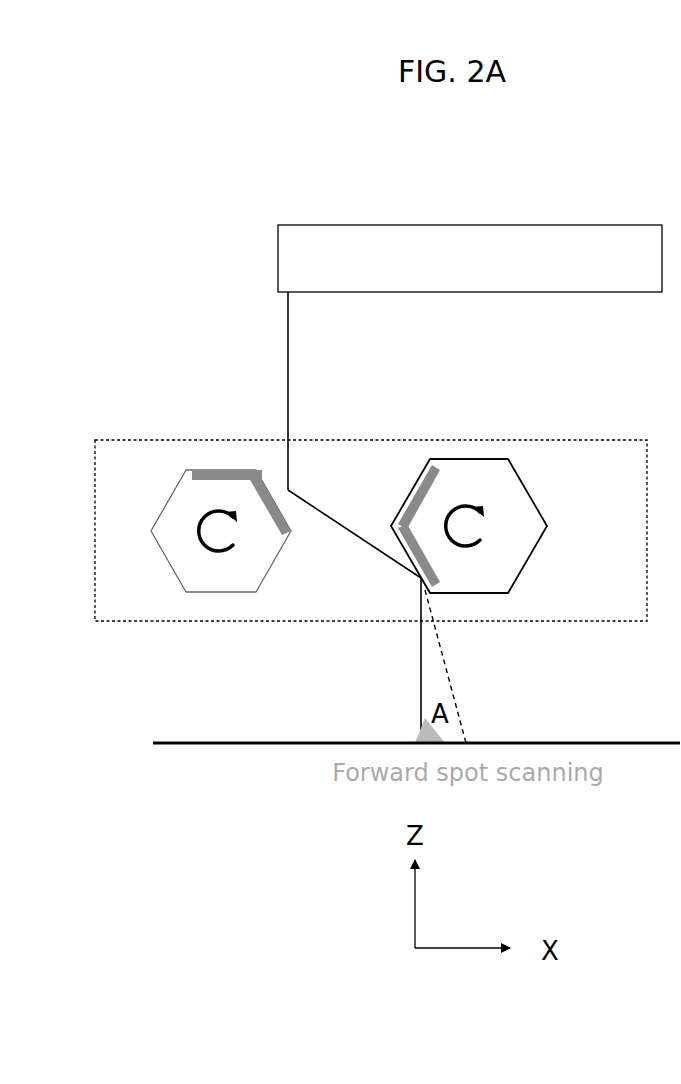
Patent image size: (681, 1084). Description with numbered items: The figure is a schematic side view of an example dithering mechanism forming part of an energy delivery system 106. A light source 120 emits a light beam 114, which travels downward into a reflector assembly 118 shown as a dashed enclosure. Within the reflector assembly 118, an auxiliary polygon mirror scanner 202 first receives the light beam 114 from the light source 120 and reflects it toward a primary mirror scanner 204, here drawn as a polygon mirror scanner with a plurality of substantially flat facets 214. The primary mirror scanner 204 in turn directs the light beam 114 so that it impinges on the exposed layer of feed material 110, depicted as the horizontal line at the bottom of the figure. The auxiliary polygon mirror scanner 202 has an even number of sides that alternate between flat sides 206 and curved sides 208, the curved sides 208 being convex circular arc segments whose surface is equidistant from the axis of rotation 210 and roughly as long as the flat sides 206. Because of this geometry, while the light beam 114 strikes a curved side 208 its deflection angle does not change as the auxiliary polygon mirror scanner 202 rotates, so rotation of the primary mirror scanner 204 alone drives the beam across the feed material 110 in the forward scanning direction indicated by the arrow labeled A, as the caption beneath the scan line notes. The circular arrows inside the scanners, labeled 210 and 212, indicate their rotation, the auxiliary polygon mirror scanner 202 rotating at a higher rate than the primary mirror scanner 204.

The energy delivery system 106 is at (216, 258).
The light source 120 is at (470, 258).
The light beam 114 is at (286, 323).
The reflector assembly 118 is at (388, 440).
The auxiliary polygon mirror scanner 202 is at (203, 604).
The primary mirror scanner 204 is at (473, 457).
The flat sides 206 is at (218, 468).
The curved sides 208 is at (284, 493).
The axis of rotation 210 is at (215, 520).
The rotation direction of second polygon mirror 212 is at (490, 530).
The facets 214 is at (530, 495).
The exposed layer of feed material 110 is at (608, 740).